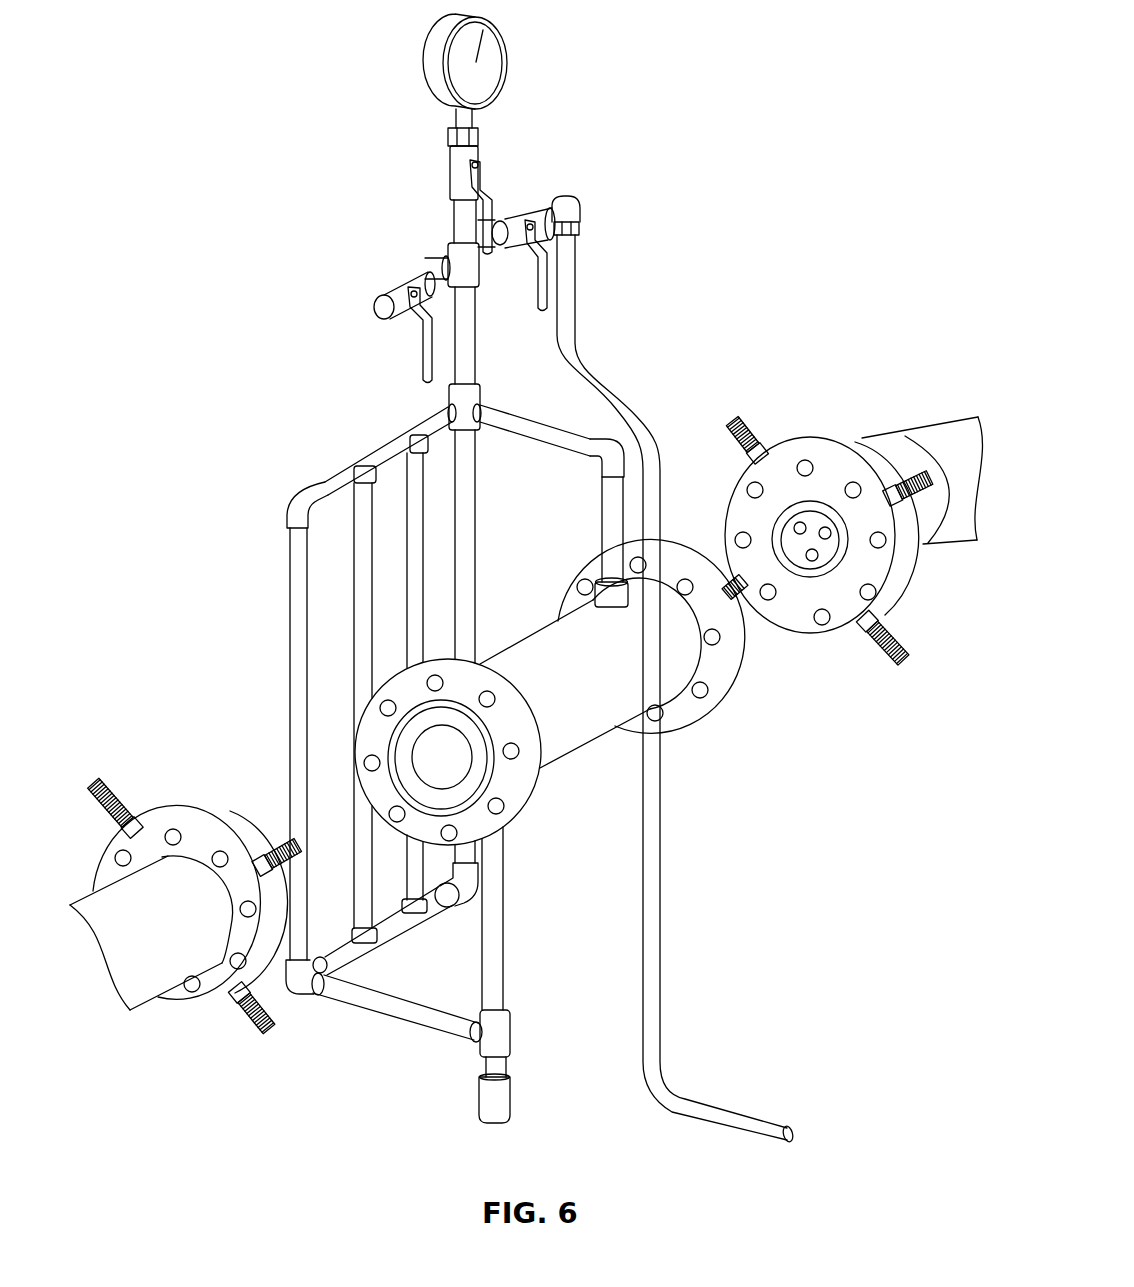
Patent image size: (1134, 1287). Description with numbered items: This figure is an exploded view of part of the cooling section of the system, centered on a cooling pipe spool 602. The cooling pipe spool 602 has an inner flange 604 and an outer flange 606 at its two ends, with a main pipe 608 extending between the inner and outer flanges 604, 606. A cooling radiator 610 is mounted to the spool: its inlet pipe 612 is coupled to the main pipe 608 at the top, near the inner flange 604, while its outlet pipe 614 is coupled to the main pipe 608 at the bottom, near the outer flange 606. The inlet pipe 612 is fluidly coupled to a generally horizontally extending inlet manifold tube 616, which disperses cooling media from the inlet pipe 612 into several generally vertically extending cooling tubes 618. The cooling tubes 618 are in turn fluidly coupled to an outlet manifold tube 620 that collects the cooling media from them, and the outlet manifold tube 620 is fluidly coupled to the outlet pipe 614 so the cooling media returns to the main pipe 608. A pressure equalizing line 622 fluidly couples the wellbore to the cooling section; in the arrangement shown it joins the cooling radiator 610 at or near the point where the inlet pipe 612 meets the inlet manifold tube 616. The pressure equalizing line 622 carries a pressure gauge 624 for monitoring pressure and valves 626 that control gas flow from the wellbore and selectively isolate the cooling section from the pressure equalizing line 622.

The cooling pipe spool 602 is at (597, 745).
The inner flange 604 is at (718, 667).
The outer flange 606 is at (497, 823).
The main pipe 608 is at (527, 640).
The cooling radiator 610 is at (357, 458).
The inlet pipe 612 is at (610, 522).
The outlet pipe 614 is at (505, 953).
The inlet manifold tube 616 is at (423, 428).
The cooling tubes 618 is at (358, 588).
The outlet manifold tube 620 is at (437, 905).
The pressure equalizing line 622 is at (652, 922).
The pressure gauge 624 is at (495, 66).
The valves 626 is at (480, 153).